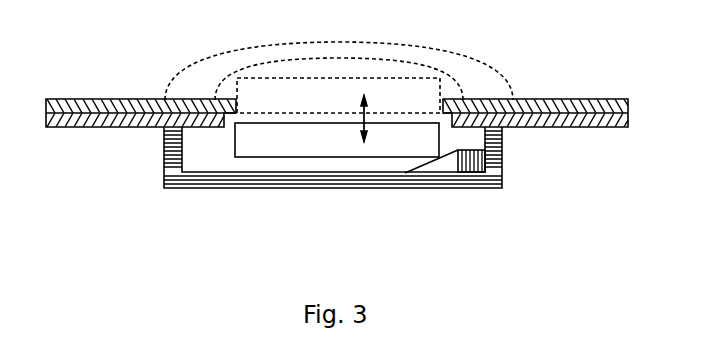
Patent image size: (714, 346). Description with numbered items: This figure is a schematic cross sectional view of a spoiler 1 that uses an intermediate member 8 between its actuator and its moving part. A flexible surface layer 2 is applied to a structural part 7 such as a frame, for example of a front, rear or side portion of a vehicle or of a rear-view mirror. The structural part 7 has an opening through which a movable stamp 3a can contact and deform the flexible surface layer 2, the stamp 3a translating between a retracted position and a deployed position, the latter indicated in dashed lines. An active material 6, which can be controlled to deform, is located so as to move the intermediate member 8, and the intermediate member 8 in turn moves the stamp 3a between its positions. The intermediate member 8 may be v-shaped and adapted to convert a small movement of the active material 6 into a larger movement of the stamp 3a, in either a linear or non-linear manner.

The spoiler 1 is at (538, 62).
The flexible surface layer 2 is at (171, 75).
The stamp 3a is at (330, 110).
The active material 6 is at (471, 136).
The structural part 7 is at (579, 143).
The intermediate member 8 is at (447, 176).